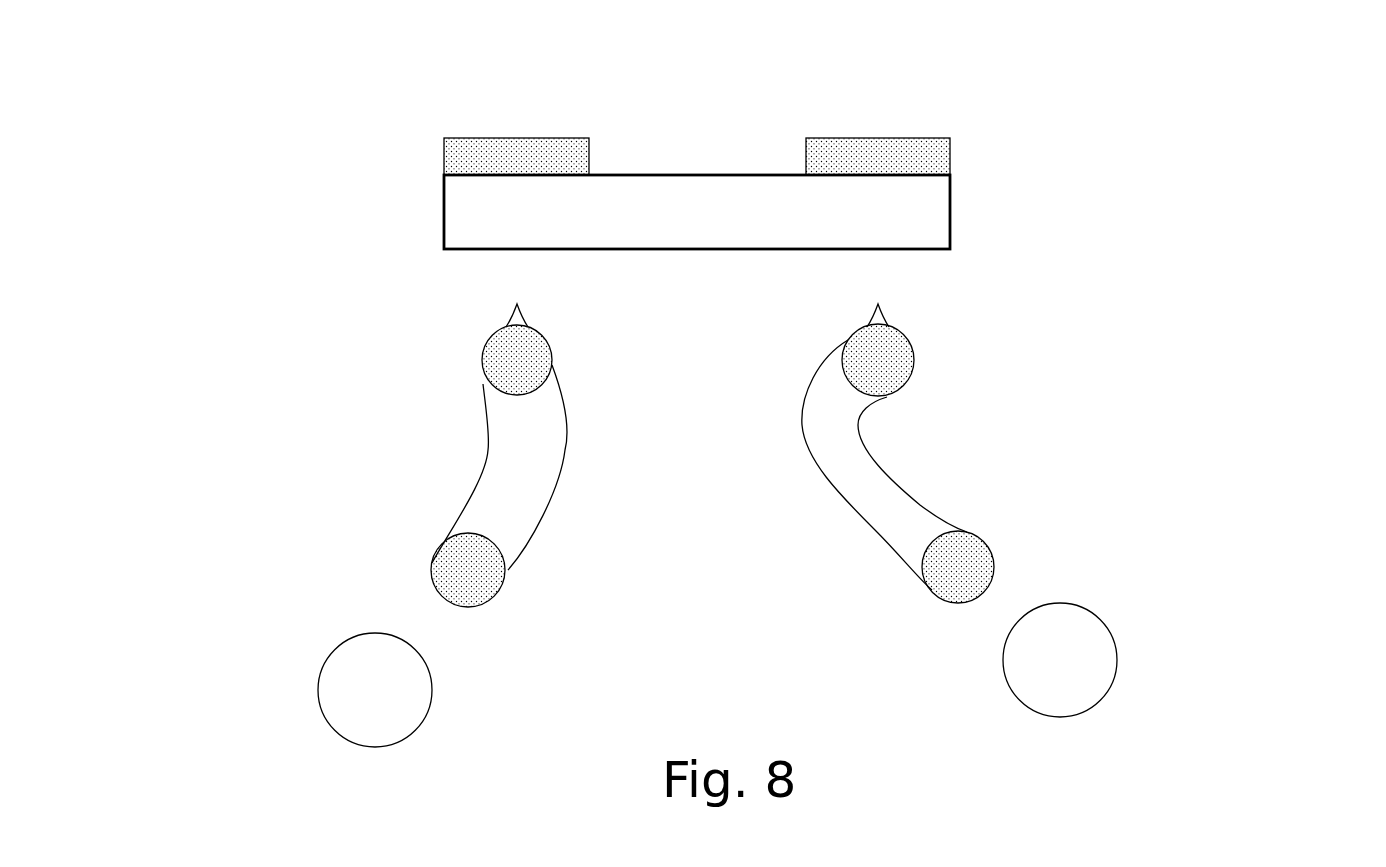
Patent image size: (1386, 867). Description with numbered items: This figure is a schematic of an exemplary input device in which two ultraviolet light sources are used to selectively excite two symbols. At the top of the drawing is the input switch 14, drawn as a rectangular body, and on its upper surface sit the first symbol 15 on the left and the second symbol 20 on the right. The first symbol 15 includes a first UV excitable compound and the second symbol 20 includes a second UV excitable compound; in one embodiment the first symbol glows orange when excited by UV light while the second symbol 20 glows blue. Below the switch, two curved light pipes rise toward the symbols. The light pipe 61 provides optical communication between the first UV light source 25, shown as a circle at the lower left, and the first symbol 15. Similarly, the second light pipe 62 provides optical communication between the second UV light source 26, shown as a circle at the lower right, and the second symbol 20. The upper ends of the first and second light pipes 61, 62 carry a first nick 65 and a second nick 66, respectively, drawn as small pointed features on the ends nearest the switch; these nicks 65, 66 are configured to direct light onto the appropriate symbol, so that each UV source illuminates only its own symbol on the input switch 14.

The input switch 14 is at (950, 230).
The first symbol 15 is at (490, 138).
The second symbol 20 is at (915, 138).
The first UV light source 25 is at (323, 715).
The second UV light source 26 is at (1102, 620).
The light pipe 61 is at (488, 473).
The second light pipe 62 is at (827, 490).
The first nick 65 is at (507, 312).
The second nick 66 is at (883, 312).